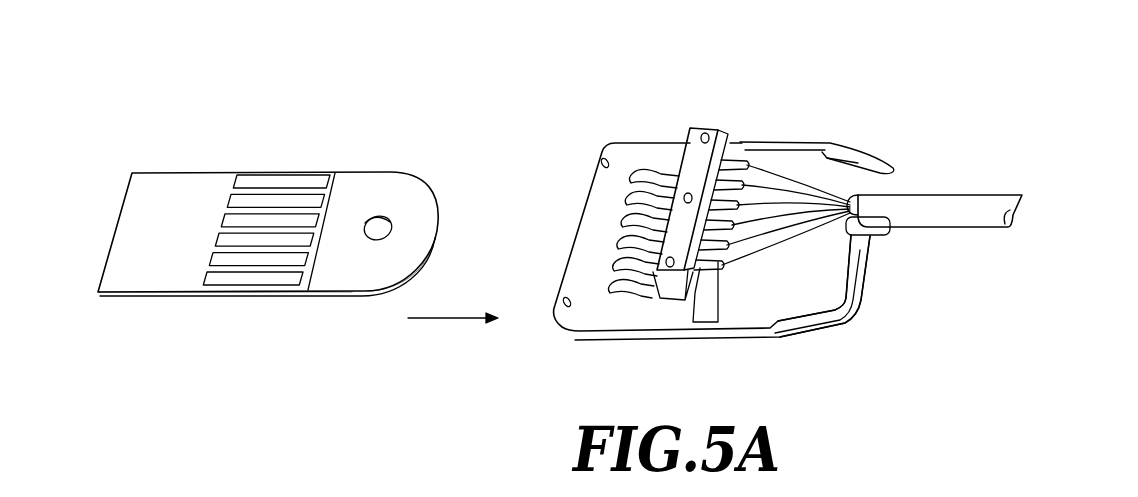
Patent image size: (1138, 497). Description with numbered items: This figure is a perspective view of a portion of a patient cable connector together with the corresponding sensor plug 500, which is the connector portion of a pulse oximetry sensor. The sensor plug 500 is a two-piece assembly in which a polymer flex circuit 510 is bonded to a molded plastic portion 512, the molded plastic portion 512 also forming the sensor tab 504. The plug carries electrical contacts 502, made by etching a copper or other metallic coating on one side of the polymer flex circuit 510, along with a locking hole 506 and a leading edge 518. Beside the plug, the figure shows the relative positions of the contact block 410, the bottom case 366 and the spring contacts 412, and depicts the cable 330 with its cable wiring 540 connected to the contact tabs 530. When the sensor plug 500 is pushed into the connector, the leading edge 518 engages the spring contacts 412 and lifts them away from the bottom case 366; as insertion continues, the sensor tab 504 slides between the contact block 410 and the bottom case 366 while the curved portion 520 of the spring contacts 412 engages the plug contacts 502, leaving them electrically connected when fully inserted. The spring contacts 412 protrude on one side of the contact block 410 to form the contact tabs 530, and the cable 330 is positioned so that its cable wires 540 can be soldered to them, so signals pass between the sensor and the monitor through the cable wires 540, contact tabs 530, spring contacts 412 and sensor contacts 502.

The sensor plug 500 is at (271, 220).
The polymer flex circuit 510 is at (153, 183).
The molded plastic portion 512 is at (137, 293).
The electrical contacts 502 is at (225, 277).
The sensor tab 504 is at (343, 277).
The locking hole 506 is at (380, 218).
The leading edge 518 is at (427, 243).
The spring contacts 412 is at (622, 282).
The contact block 410 is at (698, 128).
The curved portion 520 is at (627, 282).
The contact tabs 530 is at (716, 270).
The cable wiring 540 is at (793, 168).
The cable 330 is at (980, 193).
The bottom case 366 is at (830, 325).